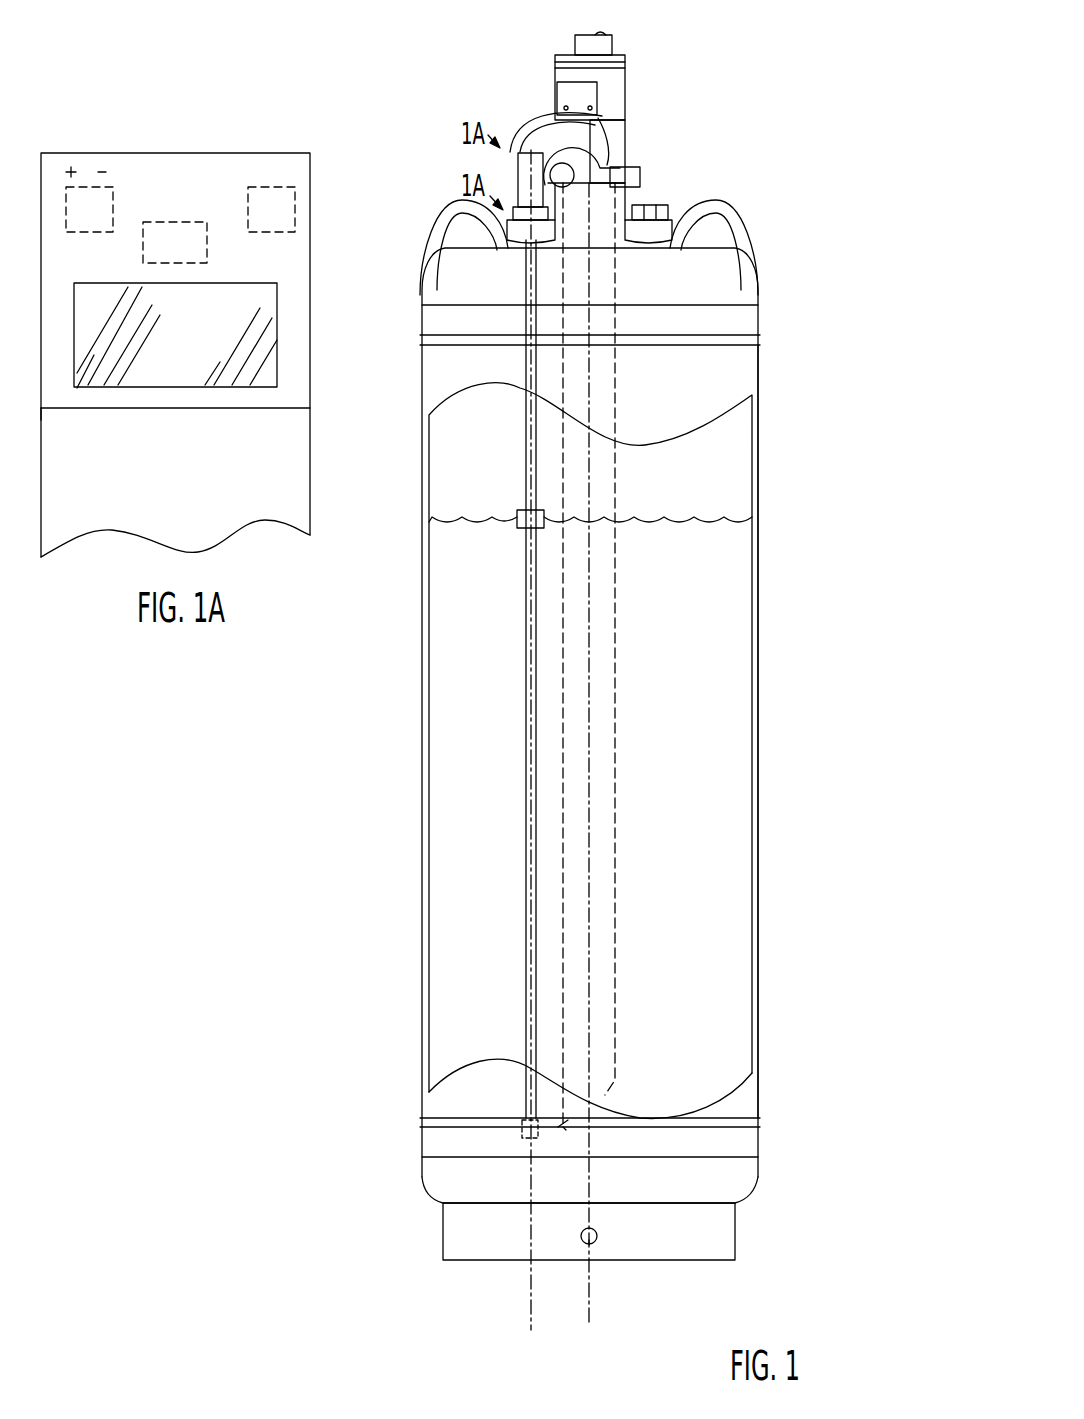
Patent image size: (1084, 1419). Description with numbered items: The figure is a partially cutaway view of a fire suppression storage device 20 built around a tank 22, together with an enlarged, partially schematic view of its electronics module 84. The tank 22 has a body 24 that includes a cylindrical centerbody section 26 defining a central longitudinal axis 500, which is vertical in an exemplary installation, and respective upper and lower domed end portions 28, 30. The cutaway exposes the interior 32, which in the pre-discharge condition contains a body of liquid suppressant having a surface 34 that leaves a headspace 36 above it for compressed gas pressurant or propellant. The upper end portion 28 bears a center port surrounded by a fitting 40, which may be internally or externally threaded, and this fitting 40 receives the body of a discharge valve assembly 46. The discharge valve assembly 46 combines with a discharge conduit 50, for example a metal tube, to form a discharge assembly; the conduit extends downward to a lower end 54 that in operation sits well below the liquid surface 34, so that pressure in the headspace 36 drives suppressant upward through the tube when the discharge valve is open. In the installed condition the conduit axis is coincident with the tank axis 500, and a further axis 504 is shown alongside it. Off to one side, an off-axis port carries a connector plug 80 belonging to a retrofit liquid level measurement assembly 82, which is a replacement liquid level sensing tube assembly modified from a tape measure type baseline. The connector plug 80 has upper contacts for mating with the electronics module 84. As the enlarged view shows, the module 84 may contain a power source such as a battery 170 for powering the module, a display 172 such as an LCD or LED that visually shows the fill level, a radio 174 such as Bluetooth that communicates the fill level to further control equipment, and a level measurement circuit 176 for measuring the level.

In FIG. 1, the fire suppression storage device 20 is at (350, 142).
In FIG. 1, the tank 22 is at (795, 528).
In FIG. 1, the body 24 is at (778, 388).
In FIG. 1, the cylindrical centerbody section 26 is at (762, 712).
In FIG. 1, the upper domed end portion 28 is at (688, 197).
In FIG. 1, the lower domed end portion 30 is at (722, 1167).
In FIG. 1, the interior 32 is at (725, 455).
In FIG. 1, the surface 34 is at (676, 525).
In FIG. 1, the headspace 36 is at (485, 459).
In FIG. 1, the fitting 40 is at (633, 195).
In FIG. 1, the discharge valve assembly 46 is at (652, 90).
In FIG. 1, the discharge conduit 50 is at (612, 840).
In FIG. 1, the lower end 54 is at (612, 1112).
In FIG. 1A, the connector plug 80 is at (188, 486).
In FIG. 1, the liquid level measurement assembly 82 is at (487, 656).
In FIG. 1A, the electronics module 84 is at (188, 199).
In FIG. 1A, the battery 170 is at (109, 226).
In FIG. 1A, the display 172 is at (194, 373).
In FIG. 1A, the radio 174 is at (291, 226).
In FIG. 1A, the level measurement circuit 176 is at (194, 259).
In FIG. 1, the central longitudinal axis 500 is at (590, 1285).
In FIG. 1, the dip tube axis 504 is at (528, 1308).